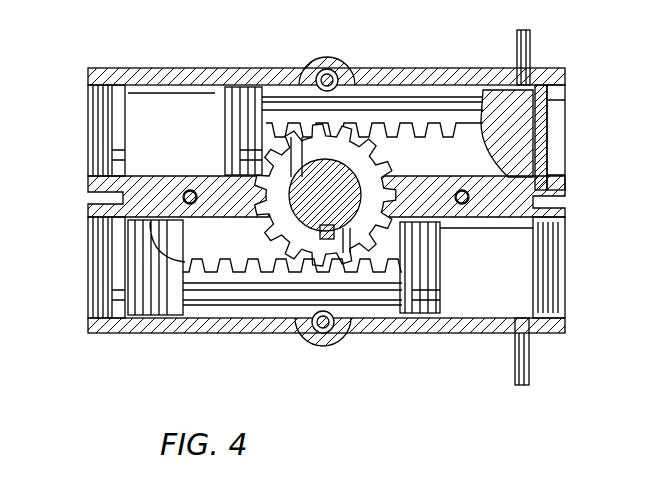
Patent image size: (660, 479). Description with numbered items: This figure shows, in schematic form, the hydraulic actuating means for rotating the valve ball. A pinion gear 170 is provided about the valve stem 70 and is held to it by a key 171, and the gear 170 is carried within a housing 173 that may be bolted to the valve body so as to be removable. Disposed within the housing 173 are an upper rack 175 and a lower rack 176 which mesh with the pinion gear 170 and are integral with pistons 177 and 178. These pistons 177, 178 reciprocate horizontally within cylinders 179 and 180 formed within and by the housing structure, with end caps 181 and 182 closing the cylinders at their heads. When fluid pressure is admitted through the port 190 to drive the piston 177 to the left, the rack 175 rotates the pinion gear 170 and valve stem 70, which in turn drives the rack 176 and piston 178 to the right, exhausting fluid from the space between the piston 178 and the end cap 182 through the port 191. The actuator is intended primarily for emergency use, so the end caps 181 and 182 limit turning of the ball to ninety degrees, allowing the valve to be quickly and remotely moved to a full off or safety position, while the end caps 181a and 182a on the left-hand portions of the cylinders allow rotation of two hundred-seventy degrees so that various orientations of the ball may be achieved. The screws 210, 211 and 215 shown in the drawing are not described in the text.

The valve stem 70 is at (295, 207).
The pinion gear 170 is at (353, 157).
The key 171 is at (333, 240).
The housing 173 is at (441, 320).
The upper rack 175 is at (284, 97).
The lower rack 176 is at (190, 306).
The piston 177 is at (530, 138).
The piston 178 is at (424, 270).
The cylinder 179 is at (182, 123).
The cylinder 180 is at (492, 303).
The end cap 181 is at (567, 112).
The end cap 181a is at (97, 121).
The end cap 182 is at (563, 272).
The end cap 182a is at (97, 253).
The port 190 is at (531, 48).
The port 191 is at (530, 372).
The mounting screw 210 is at (328, 66).
The mounting screw 211 is at (323, 326).
The screw 215 is at (190, 189).